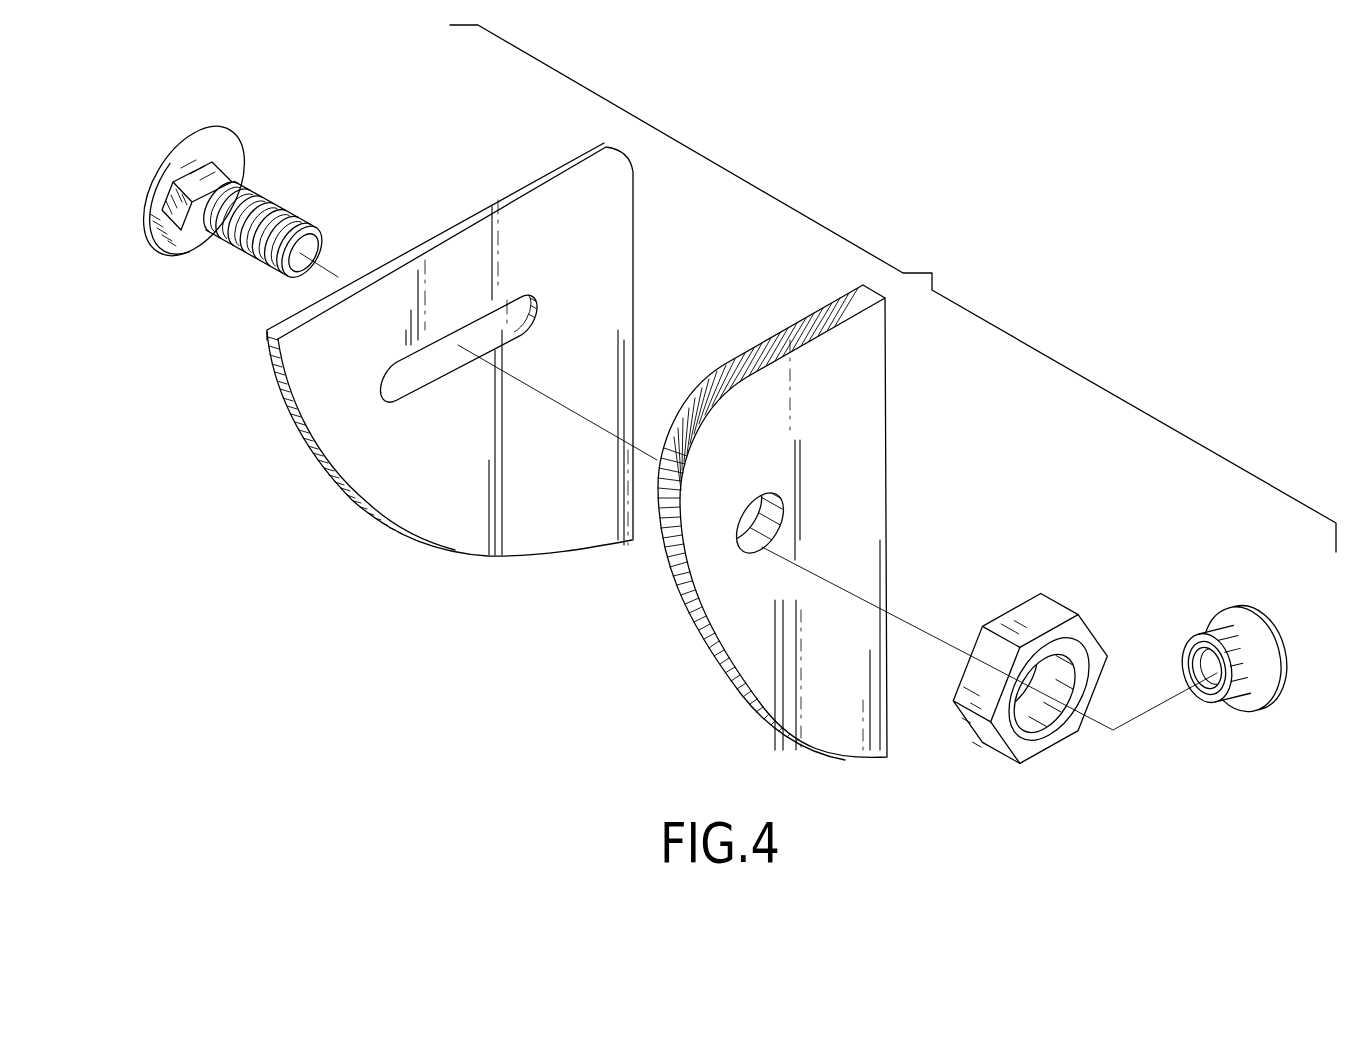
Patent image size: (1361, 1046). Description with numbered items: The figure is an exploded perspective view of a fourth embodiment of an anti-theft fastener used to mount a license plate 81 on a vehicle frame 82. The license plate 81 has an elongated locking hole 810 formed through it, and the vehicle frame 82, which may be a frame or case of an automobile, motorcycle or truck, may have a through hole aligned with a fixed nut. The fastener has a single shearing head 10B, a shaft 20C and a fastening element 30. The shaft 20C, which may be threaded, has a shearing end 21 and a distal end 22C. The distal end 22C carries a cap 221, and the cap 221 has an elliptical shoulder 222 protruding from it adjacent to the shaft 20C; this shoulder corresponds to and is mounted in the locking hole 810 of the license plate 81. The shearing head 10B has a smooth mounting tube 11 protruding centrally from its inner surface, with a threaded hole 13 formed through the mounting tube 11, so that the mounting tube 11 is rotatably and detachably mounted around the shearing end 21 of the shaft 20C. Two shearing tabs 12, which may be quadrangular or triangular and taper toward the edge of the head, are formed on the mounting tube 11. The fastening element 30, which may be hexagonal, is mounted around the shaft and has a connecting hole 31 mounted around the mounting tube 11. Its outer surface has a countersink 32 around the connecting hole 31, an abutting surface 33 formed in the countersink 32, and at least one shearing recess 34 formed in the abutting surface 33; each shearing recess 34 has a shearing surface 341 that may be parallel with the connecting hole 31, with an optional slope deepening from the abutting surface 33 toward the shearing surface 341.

The shearing head 10B is at (1262, 659).
The mounting tube 11 is at (1249, 657).
The shearing tab 12 is at (1262, 688).
The threaded hole 13 is at (1216, 700).
The shaft 20C is at (310, 182).
The shearing end 21 is at (305, 236).
The distal end 22C is at (200, 213).
The cap 221 is at (221, 141).
The elliptical shoulder 222 is at (239, 178).
The fastening element 30 is at (1050, 675).
The connecting hole 31 is at (1036, 663).
The countersink 32 is at (1074, 679).
The abutting surface 33 is at (1058, 722).
The shearing recess 34 is at (1010, 716).
The shearing surface 341 is at (1015, 718).
The license plate 81 is at (489, 349).
The locking hole 810 is at (538, 317).
The vehicle frame 82 is at (878, 387).